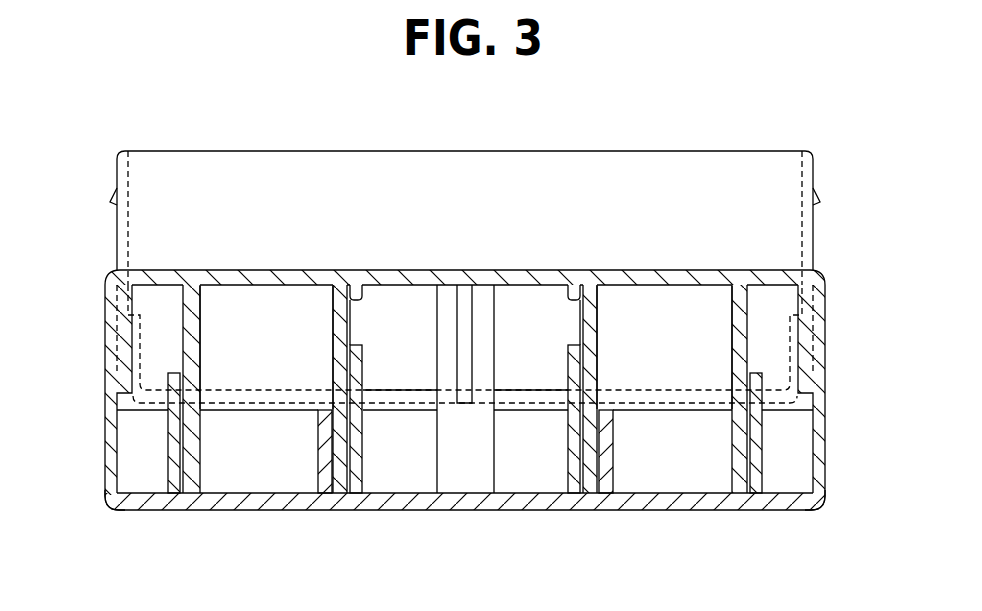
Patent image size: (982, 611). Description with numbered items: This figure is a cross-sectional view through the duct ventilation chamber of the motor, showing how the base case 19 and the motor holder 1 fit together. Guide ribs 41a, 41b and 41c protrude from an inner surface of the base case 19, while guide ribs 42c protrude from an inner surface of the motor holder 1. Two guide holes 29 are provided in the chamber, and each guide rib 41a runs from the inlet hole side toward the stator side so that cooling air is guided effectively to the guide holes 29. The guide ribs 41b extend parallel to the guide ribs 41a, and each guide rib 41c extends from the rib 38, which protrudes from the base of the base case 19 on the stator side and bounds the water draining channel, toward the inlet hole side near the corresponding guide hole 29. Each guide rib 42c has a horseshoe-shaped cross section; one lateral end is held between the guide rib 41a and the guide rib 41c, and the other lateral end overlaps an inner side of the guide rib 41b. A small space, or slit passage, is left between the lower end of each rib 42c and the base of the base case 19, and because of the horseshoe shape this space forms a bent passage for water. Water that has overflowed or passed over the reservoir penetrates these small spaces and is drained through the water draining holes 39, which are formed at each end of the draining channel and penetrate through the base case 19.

The motor holder 1 is at (680, 268).
The base case 19 is at (463, 510).
The guide hole 29 is at (360, 293).
The rib 38 is at (240, 407).
The water draining hole 39 is at (121, 507).
The guide rib 41a is at (397, 455).
The guide rib 41b is at (160, 445).
The guide rib 41c is at (318, 436).
The guide rib 42c is at (332, 322).